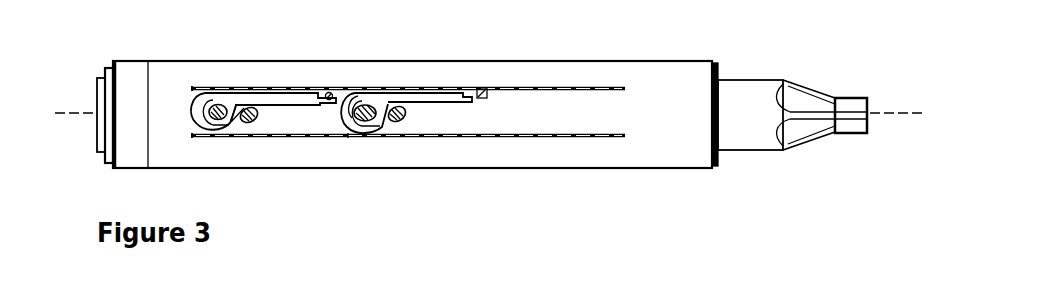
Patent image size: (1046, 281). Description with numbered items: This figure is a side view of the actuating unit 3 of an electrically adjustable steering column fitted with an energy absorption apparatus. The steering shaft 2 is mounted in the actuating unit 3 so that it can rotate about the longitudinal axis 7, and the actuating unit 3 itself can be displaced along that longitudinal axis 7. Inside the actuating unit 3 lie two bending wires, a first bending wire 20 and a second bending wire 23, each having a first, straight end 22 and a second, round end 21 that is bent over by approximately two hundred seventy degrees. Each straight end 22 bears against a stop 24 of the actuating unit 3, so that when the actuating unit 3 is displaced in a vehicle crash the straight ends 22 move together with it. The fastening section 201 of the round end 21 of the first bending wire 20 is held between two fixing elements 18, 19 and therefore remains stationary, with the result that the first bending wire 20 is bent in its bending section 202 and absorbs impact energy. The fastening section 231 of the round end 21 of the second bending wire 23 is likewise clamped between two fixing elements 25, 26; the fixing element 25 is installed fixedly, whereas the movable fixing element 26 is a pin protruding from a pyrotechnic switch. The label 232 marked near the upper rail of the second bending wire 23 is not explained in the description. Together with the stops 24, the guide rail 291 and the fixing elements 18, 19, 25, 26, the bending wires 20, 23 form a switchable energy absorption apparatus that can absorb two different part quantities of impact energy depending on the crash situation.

The steering shaft 2 is at (748, 90).
The actuating unit 3 is at (613, 72).
The longitudinal axis 7 is at (896, 113).
The fixing element 18 is at (365, 126).
The fixing element 19 is at (397, 118).
The first bending wire 20 is at (416, 100).
The round end 21 is at (193, 136).
The straight end 22 is at (307, 96).
The second bending wire 23 is at (241, 98).
The stop 24 is at (329, 92).
The fixing element 25 is at (253, 124).
The movable fixing element 26 is at (218, 124).
The fastening section 201 is at (379, 124).
The bending section 202 is at (355, 99).
The fastening section 231 is at (232, 128).
The upper guide rail 232 is at (200, 86).
The guide rail 291 is at (494, 138).